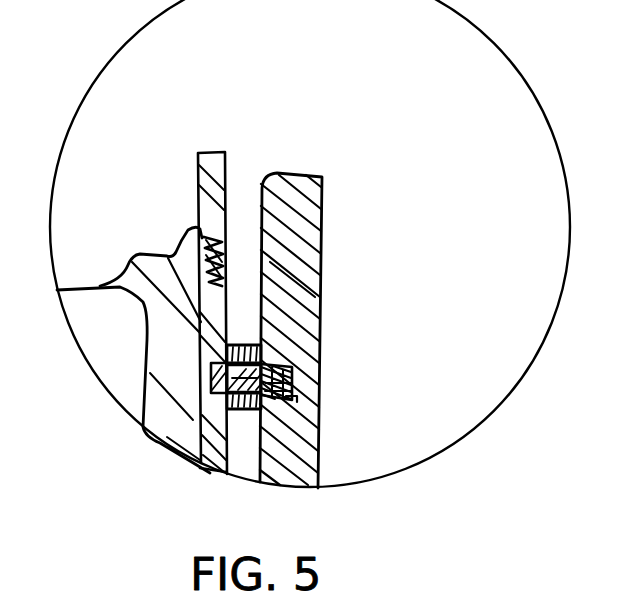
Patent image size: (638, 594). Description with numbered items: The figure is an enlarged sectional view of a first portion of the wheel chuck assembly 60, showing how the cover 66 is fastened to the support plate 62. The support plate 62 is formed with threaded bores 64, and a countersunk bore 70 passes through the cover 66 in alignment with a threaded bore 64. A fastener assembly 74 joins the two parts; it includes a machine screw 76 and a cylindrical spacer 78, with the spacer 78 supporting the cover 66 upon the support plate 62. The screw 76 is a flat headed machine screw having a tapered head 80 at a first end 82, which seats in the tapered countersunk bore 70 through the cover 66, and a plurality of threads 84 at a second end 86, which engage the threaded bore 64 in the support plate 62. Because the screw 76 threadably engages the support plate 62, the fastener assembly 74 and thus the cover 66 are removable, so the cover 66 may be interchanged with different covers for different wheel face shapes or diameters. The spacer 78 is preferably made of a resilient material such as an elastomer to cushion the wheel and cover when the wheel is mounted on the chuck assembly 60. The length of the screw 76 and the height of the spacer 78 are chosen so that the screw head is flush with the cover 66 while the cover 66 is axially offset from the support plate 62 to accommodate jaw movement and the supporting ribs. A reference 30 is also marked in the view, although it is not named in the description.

The assembly 30 is at (403, 287).
The wheel chuck assembly 60 is at (91, 458).
The support plate 62 is at (300, 176).
The threaded bores 64 is at (283, 388).
The cover 66 is at (211, 152).
The countersunk bores 70 is at (211, 362).
The fastener assemblies 74 is at (239, 430).
The machine screw 76 is at (207, 378).
The cylindrical spacer 78 is at (293, 277).
The tapered head 80 is at (238, 345).
The first end 82 is at (226, 400).
The threads 84 is at (283, 360).
The second end 86 is at (292, 398).